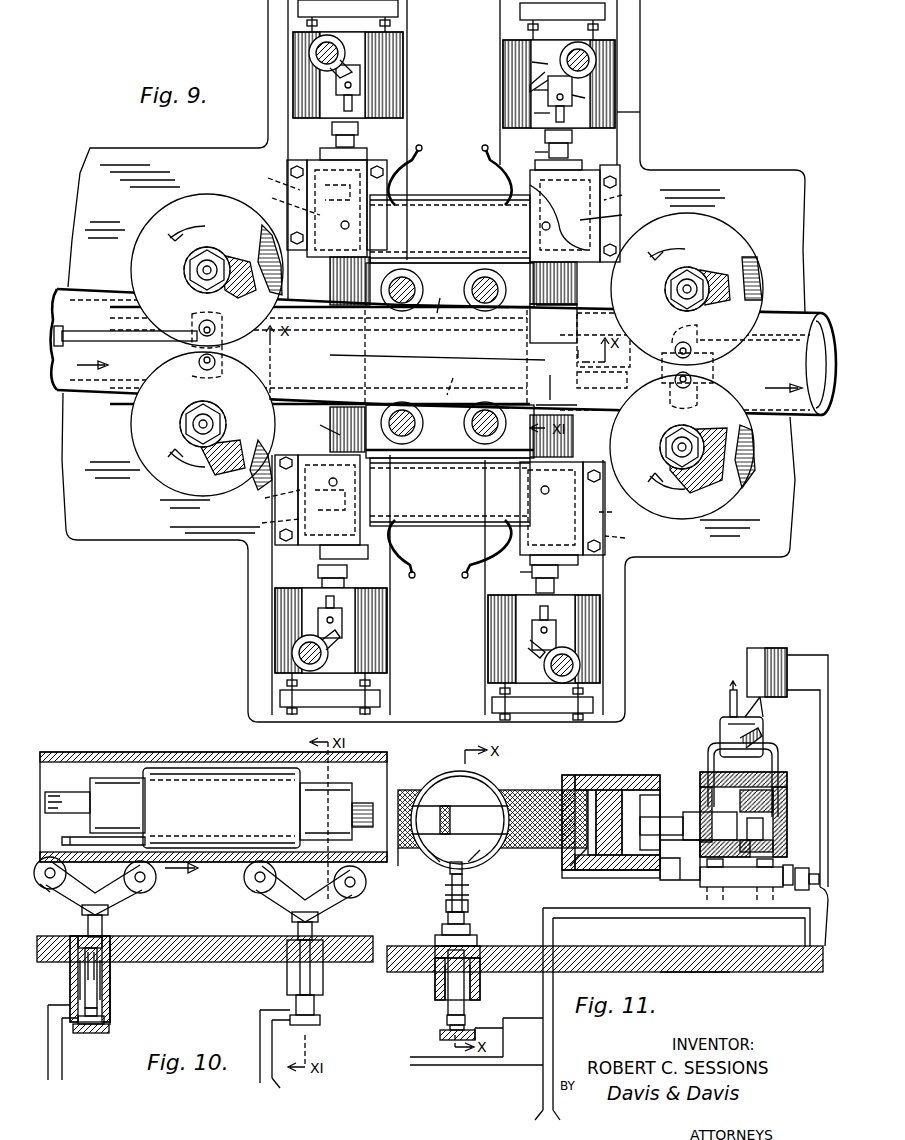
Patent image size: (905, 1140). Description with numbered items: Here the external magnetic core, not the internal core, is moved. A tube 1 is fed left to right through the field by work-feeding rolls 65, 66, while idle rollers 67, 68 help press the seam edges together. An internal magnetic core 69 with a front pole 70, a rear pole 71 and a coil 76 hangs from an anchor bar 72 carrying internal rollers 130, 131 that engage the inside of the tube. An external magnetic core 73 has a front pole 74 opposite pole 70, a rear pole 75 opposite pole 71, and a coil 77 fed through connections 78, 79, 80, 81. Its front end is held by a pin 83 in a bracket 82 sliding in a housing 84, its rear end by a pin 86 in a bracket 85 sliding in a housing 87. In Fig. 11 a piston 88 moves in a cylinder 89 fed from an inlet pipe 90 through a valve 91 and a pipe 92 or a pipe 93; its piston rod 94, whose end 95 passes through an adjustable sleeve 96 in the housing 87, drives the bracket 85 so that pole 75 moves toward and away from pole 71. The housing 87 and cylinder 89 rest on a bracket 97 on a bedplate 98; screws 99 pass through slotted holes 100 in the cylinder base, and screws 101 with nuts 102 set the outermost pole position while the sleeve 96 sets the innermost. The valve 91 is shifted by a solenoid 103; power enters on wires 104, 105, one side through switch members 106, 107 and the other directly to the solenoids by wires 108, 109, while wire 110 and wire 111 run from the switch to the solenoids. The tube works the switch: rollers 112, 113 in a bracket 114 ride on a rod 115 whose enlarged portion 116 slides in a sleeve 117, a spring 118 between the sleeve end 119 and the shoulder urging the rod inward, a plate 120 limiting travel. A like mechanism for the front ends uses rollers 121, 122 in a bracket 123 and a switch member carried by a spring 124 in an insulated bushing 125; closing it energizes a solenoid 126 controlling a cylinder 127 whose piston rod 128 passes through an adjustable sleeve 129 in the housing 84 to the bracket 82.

In FIG. 9, the tube 1 is at (93, 393).
In FIG. 10, the tube 1 is at (262, 752).
In FIG. 11, the tube 1 is at (447, 770).
In FIG. 9, the work-feeding roll 65 is at (160, 213).
In FIG. 9, the work-feeding roll 66 is at (742, 238).
In FIG. 9, the roller 67 is at (418, 283).
In FIG. 9, the roller 68 is at (498, 284).
In FIG. 9, the internal magnetic core 69 is at (443, 403).
In FIG. 10, the internal magnetic core 69 is at (192, 800).
In FIG. 11, the internal magnetic core 69 is at (497, 790).
In FIG. 9, the front pole 70 is at (318, 426).
In FIG. 10, the front pole 70 is at (118, 780).
In FIG. 9, the rear pole 71 is at (571, 362).
In FIG. 10, the rear pole 71 is at (345, 790).
In FIG. 11, the rear pole 71 is at (430, 780).
In FIG. 9, the anchor bar 72 is at (68, 333).
In FIG. 10, the anchor bar 72 is at (62, 794).
In FIG. 11, the anchor bar 72 is at (428, 852).
In FIG. 9, the external magnetic core 73 is at (460, 197).
In FIG. 11, the external magnetic core 73 is at (616, 790).
In FIG. 9, the front pole 74 is at (330, 294).
In FIG. 9, the rear pole 75 is at (566, 359).
In FIG. 11, the rear pole 75 is at (540, 850).
In FIG. 9, the coil 76 is at (448, 298).
In FIG. 10, the coil 76 is at (150, 775).
In FIG. 11, the coil 76 is at (448, 860).
In FIG. 9, the coil 77 is at (426, 197).
In FIG. 9, the connection 78 is at (425, 140).
In FIG. 9, the connection 79 is at (484, 146).
In FIG. 9, the connection 80 is at (405, 559).
In FIG. 9, the connection 81 is at (478, 559).
In FIG. 9, the bracket 82 is at (266, 351).
In FIG. 9, the pin 83 is at (280, 348).
In FIG. 9, the housing 84 is at (300, 160).
In FIG. 9, the bracket 85 is at (626, 366).
In FIG. 11, the bracket 85 is at (650, 790).
In FIG. 9, the pin 86 is at (612, 364).
In FIG. 11, the pin 86 is at (592, 790).
In FIG. 9, the housing 87 is at (620, 165).
In FIG. 11, the housing 87 is at (568, 782).
In FIG. 11, the piston 88 is at (702, 772).
In FIG. 9, the cylinder 89 is at (616, 85).
In FIG. 11, the cylinder 89 is at (779, 770).
In FIG. 9, the inlet pipe 90 is at (530, 92).
In FIG. 11, the inlet pipe 90 is at (728, 695).
In FIG. 9, the valve 91 is at (590, 99).
In FIG. 11, the valve 91 is at (722, 720).
In FIG. 9, the pipe 92 is at (531, 115).
In FIG. 11, the pipe 92 is at (715, 745).
In FIG. 9, the pipe 93 is at (530, 65).
In FIG. 11, the pipe 93 is at (765, 737).
In FIG. 9, the piston rod 94 is at (574, 135).
In FIG. 11, the piston rod 94 is at (690, 812).
In FIG. 9, the piston rod end 95 is at (580, 170).
In FIG. 11, the piston rod end 95 is at (645, 870).
In FIG. 9, the adjustable sleeve 96 is at (521, 361).
In FIG. 11, the adjustable sleeve 96 is at (680, 880).
In FIG. 9, the bracket 97 is at (640, 113).
In FIG. 11, the bracket 97 is at (695, 973).
In FIG. 9, the bedplate 98 is at (690, 176).
In FIG. 10, the bedplate 98 is at (203, 962).
In FIG. 11, the bedplate 98 is at (772, 973).
In FIG. 11, the screw 99 is at (776, 860).
In FIG. 11, the slotted hole 100 is at (739, 887).
In FIG. 9, the screw 101 is at (540, 715).
In FIG. 11, the screw 101 is at (790, 866).
In FIG. 9, the nut 102 is at (607, 18).
In FIG. 11, the nut 102 is at (798, 890).
In FIG. 9, the solenoid 103 is at (598, 52).
In FIG. 11, the solenoid 103 is at (762, 656).
In FIG. 10, the wire 104 is at (292, 1092).
In FIG. 11, the wire 104 is at (523, 1118).
In FIG. 11, the wire 105 is at (567, 1118).
In FIG. 10, the switch member 106 is at (104, 1020).
In FIG. 11, the switch member 106 is at (440, 1033).
In FIG. 10, the switch member 107 is at (100, 1008).
In FIG. 11, the switch member 107 is at (446, 1016).
In FIG. 11, the wire 108 is at (628, 918).
In FIG. 11, the wire 109 is at (448, 1066).
In FIG. 10, the wire 110 is at (258, 1030).
In FIG. 11, the wire 110 is at (520, 1018).
In FIG. 11, the wire 111 is at (440, 1046).
In FIG. 10, the roller 112 is at (252, 888).
In FIG. 10, the roller 113 is at (369, 890).
In FIG. 11, the roller 113 is at (465, 876).
In FIG. 10, the bracket 114 is at (280, 905).
In FIG. 11, the bracket 114 is at (470, 905).
In FIG. 10, the rod 115 is at (335, 908).
In FIG. 11, the rod 115 is at (448, 920).
In FIG. 10, the enlarged portion 116 is at (76, 960).
In FIG. 11, the enlarged portion 116 is at (480, 965).
In FIG. 10, the sleeve 117 is at (72, 985).
In FIG. 11, the sleeve 117 is at (436, 978).
In FIG. 10, the spring 118 is at (110, 975).
In FIG. 11, the spring 118 is at (435, 990).
In FIG. 10, the sleeve end 119 is at (112, 992).
In FIG. 11, the sleeve end 119 is at (470, 1000).
In FIG. 10, the plate 120 is at (108, 915).
In FIG. 11, the plate 120 is at (472, 930).
In FIG. 10, the roller 121 is at (51, 884).
In FIG. 10, the roller 122 is at (150, 879).
In FIG. 10, the bracket 123 is at (128, 890).
In FIG. 10, the spring 124 is at (86, 1033).
In FIG. 10, the insulated bushing 125 is at (112, 1033).
In FIG. 9, the solenoid 126 is at (318, 52).
In FIG. 9, the cylinder 127 is at (296, 78).
In FIG. 9, the piston rod 128 is at (358, 135).
In FIG. 9, the adjustable sleeve 129 is at (334, 145).
In FIG. 9, the internal roller 130 is at (182, 284).
In FIG. 9, the internal roller 131 is at (712, 290).